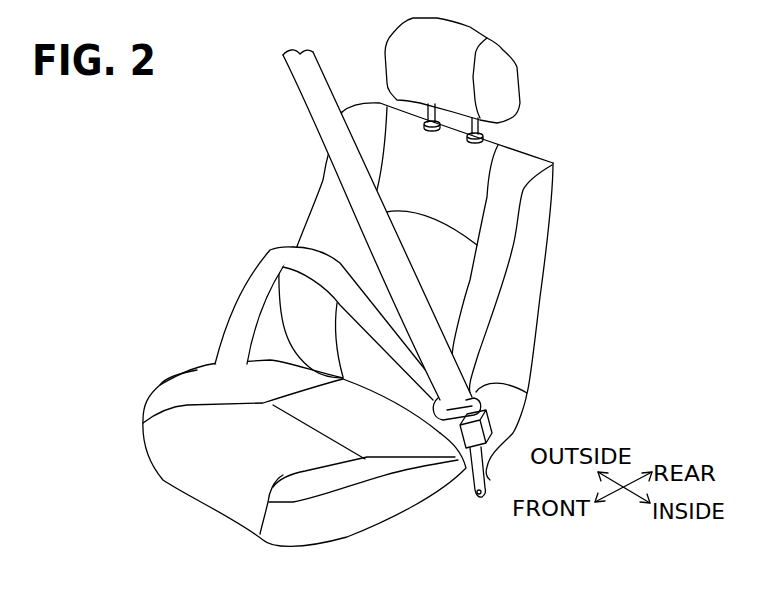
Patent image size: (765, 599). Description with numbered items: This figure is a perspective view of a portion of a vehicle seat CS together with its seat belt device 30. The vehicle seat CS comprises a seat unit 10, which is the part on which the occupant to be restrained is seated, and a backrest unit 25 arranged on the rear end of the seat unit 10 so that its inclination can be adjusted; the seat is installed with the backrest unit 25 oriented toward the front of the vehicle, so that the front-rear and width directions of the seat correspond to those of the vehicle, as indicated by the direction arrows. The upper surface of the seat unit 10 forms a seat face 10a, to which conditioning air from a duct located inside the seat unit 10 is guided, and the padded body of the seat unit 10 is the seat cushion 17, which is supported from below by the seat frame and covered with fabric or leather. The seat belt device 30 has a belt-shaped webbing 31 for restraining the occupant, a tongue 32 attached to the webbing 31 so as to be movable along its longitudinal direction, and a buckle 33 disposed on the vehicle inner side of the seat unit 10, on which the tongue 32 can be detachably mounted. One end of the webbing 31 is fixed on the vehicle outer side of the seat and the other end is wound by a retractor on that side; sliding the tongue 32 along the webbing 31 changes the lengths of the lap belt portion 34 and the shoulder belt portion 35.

The vehicle seat CS is at (359, 282).
The backrest unit 25 is at (537, 263).
The seat unit 10 is at (277, 447).
The seat face 10a is at (183, 418).
The seat cushion 17 is at (207, 488).
The seat belt device 30 is at (239, 271).
The webbing 31 is at (323, 225).
The lap belt portion 34 is at (273, 258).
The shoulder belt portion 35 is at (343, 171).
The tongue 32 is at (473, 397).
The buckle 33 is at (485, 437).